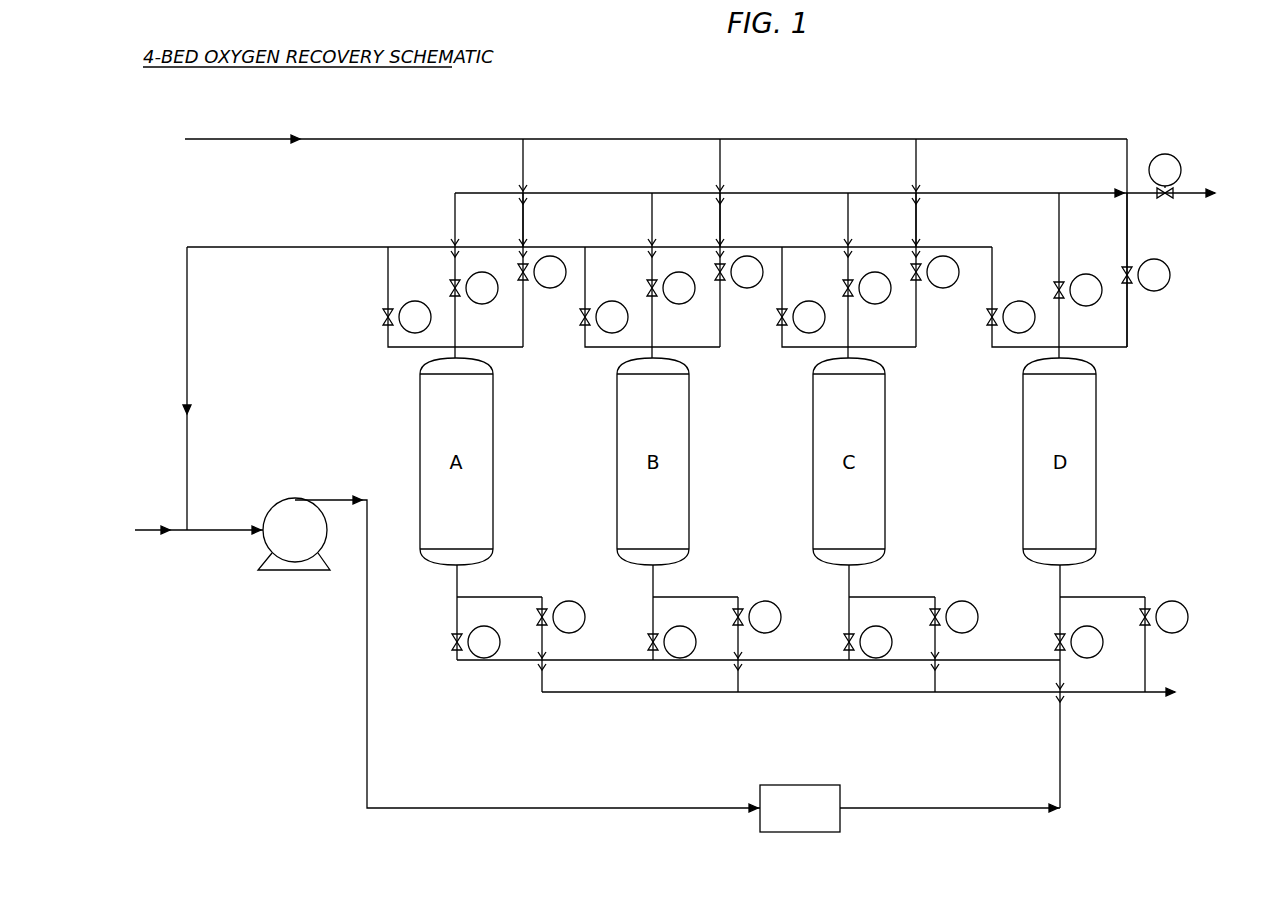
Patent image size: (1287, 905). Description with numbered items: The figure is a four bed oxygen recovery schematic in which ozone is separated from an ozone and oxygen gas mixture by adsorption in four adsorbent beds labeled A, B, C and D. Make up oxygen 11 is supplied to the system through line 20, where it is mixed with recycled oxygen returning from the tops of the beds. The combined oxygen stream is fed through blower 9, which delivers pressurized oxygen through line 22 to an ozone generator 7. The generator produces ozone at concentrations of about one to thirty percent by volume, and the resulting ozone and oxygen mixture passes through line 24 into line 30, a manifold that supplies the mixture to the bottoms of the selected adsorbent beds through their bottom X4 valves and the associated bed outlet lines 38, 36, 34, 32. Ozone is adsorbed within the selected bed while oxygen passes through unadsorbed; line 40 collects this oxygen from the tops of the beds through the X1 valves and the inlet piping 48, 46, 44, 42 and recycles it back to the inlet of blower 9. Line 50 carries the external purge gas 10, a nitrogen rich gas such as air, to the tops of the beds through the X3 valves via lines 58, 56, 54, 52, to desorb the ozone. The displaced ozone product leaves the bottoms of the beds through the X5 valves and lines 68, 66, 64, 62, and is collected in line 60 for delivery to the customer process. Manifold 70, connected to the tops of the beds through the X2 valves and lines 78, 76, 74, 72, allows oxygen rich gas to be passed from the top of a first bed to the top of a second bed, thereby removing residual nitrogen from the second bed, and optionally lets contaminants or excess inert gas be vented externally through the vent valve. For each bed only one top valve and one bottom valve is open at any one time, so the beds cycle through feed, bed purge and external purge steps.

The external purge gas 10 is at (313, 125).
The external purge gas line 50 is at (465, 137).
The manifold 70 is at (981, 192).
The bed A purge inlet valve line 78 is at (454, 226).
The bed B purge inlet valve line 76 is at (651, 226).
The bed C purge inlet valve line 74 is at (847, 226).
The bed top line 72 is at (1058, 226).
The bed A vent valve line 58 is at (525, 226).
The bed B vent valve line 56 is at (722, 226).
The bed C vent valve line 54 is at (918, 226).
The external purge inlet line 52 is at (1130, 250).
The recycle oxygen line 40 is at (186, 326).
The bed A inlet piping 48 is at (387, 292).
The bed B inlet piping 46 is at (586, 292).
The bed C inlet piping 44 is at (783, 292).
The bed D inlet piping 42 is at (993, 292).
The bed A outlet line 38 is at (459, 596).
The bed B outlet line 36 is at (655, 596).
The bed C outlet line 34 is at (851, 596).
The bed bottom outlet line 32 is at (1061, 596).
The bed A product valve line 68 is at (544, 596).
The bed B product valve line 66 is at (740, 596).
The bed C product valve line 64 is at (937, 596).
The product branch line 62 is at (1147, 596).
The oxygen/ozone manifold line 30 is at (1013, 659).
The ozone product line 60 is at (567, 694).
The ozone generator outlet line 24 is at (1062, 772).
The ozone generator 7 is at (803, 796).
The blower discharge line 22 is at (366, 716).
The blower 9 is at (295, 548).
The make up oxygen line 20 is at (147, 528).
The make up oxygen 11 is at (175, 563).